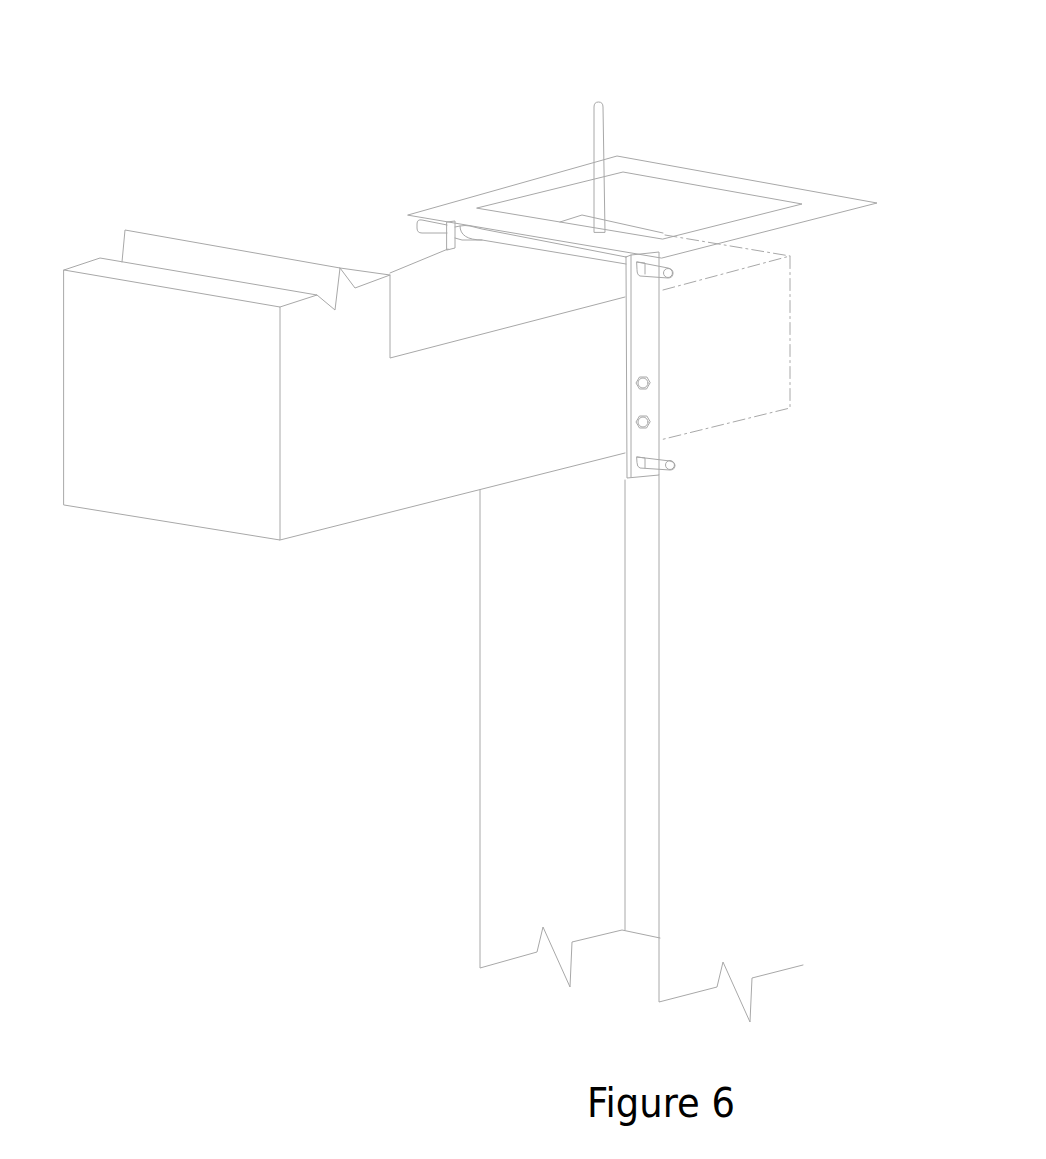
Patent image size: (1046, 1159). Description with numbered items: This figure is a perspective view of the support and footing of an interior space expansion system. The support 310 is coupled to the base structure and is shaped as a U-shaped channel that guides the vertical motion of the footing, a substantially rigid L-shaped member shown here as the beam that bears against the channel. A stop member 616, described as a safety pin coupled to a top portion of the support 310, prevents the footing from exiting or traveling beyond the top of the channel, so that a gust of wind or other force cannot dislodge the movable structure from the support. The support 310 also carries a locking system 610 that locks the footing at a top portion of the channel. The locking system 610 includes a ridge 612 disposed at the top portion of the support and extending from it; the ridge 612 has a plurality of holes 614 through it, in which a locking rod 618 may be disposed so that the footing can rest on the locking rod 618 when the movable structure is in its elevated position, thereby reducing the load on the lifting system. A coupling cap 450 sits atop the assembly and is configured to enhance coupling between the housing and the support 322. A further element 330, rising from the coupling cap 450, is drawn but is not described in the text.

The support 310 is at (700, 668).
The support 322 is at (344, 385).
The rod 330 is at (597, 128).
The coupling cap 450 is at (838, 188).
The locking system 610 is at (722, 302).
The ridge 612 is at (645, 362).
The holes 614 is at (648, 420).
The stop member 616 is at (408, 217).
The locking rod 618 is at (672, 463).